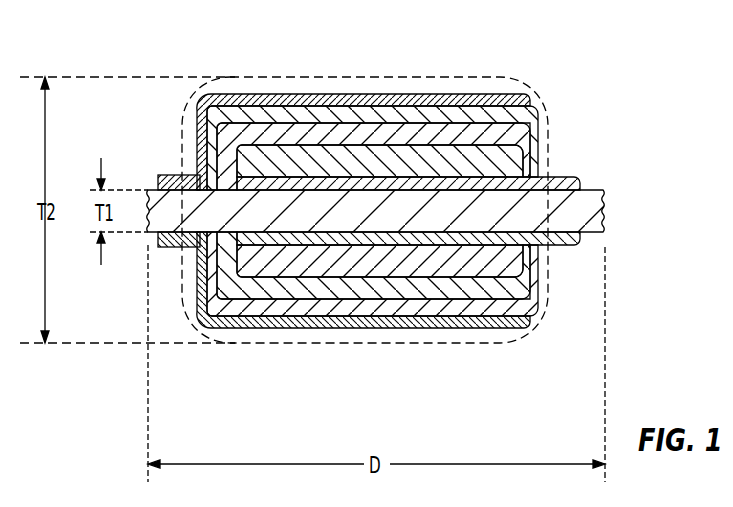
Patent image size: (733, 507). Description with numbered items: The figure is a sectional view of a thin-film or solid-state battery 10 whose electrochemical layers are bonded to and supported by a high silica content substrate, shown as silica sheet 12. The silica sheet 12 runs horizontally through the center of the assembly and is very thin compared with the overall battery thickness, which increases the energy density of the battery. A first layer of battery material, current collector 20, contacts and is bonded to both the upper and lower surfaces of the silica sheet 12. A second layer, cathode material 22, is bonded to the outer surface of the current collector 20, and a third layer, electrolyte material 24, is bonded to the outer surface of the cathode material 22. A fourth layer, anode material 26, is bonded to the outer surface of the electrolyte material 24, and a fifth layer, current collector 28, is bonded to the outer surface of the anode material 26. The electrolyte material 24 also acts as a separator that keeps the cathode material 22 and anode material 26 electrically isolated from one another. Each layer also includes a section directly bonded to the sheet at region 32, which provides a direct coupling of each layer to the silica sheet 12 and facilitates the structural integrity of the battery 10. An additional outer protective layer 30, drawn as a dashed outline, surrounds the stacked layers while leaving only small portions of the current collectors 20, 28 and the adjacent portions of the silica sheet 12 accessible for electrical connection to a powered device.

The thin-film battery 10 is at (639, 83).
The silica sheet 12 is at (592, 203).
The current collector 20 is at (580, 183).
The cathode material 22 is at (512, 160).
The electrolyte material 24 is at (530, 133).
The anode material 26 is at (512, 110).
The current collector 28 is at (474, 98).
The outer protective layer 30 is at (428, 77).
The region 32 is at (208, 237).